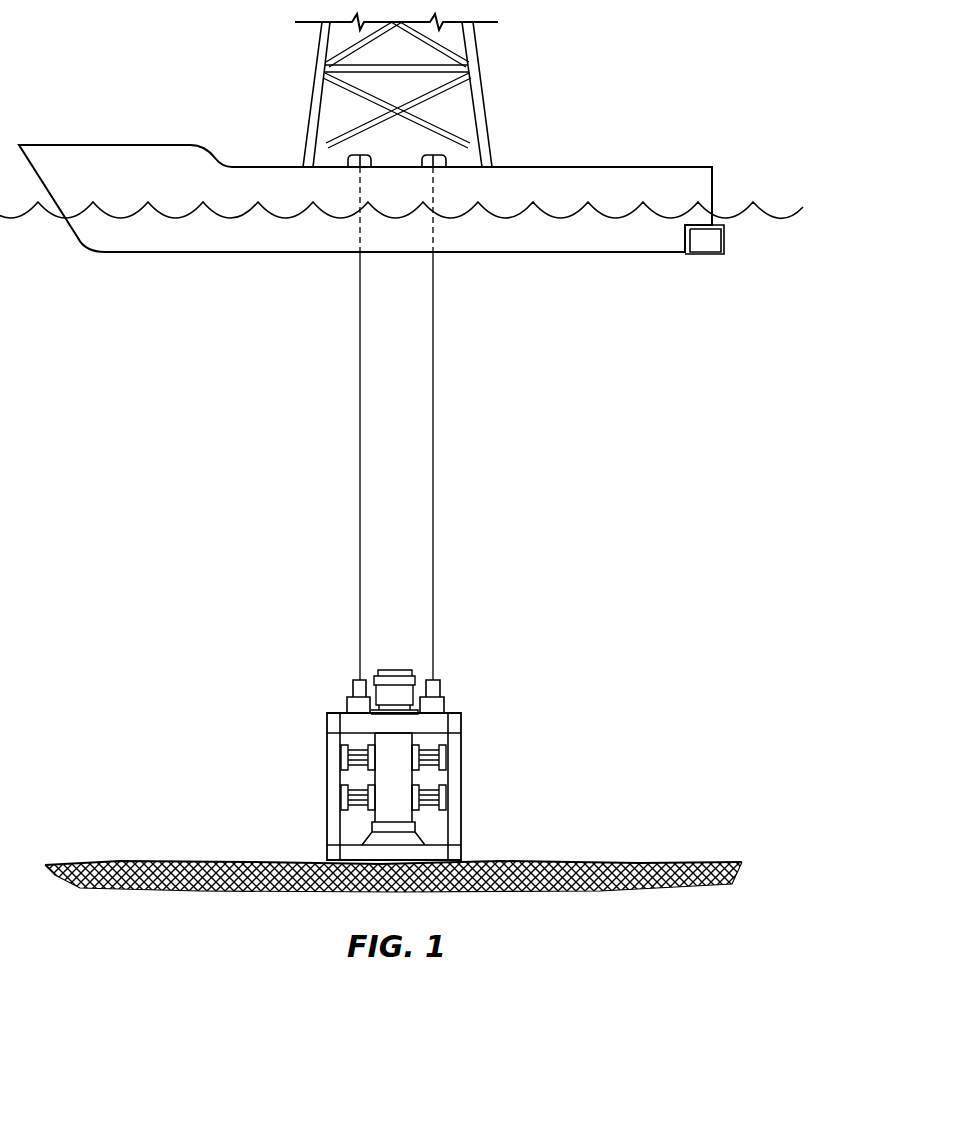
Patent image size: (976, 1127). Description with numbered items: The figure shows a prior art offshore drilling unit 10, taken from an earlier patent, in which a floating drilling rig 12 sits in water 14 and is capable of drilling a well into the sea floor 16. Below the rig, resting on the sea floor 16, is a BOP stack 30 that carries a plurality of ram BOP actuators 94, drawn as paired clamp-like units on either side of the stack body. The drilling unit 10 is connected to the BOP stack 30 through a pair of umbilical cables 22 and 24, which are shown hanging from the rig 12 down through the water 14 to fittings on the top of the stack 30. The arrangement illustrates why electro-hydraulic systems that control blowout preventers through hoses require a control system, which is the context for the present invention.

The offshore drilling unit 10 is at (226, 54).
The floating drilling rig 12 is at (485, 103).
The water 14 is at (586, 201).
The sea floor 16 is at (596, 864).
The umbilical cable 22 is at (358, 637).
The umbilical cable 24 is at (434, 637).
The BOP stack 30 is at (463, 774).
The ram BOP actuators 94 is at (342, 760).